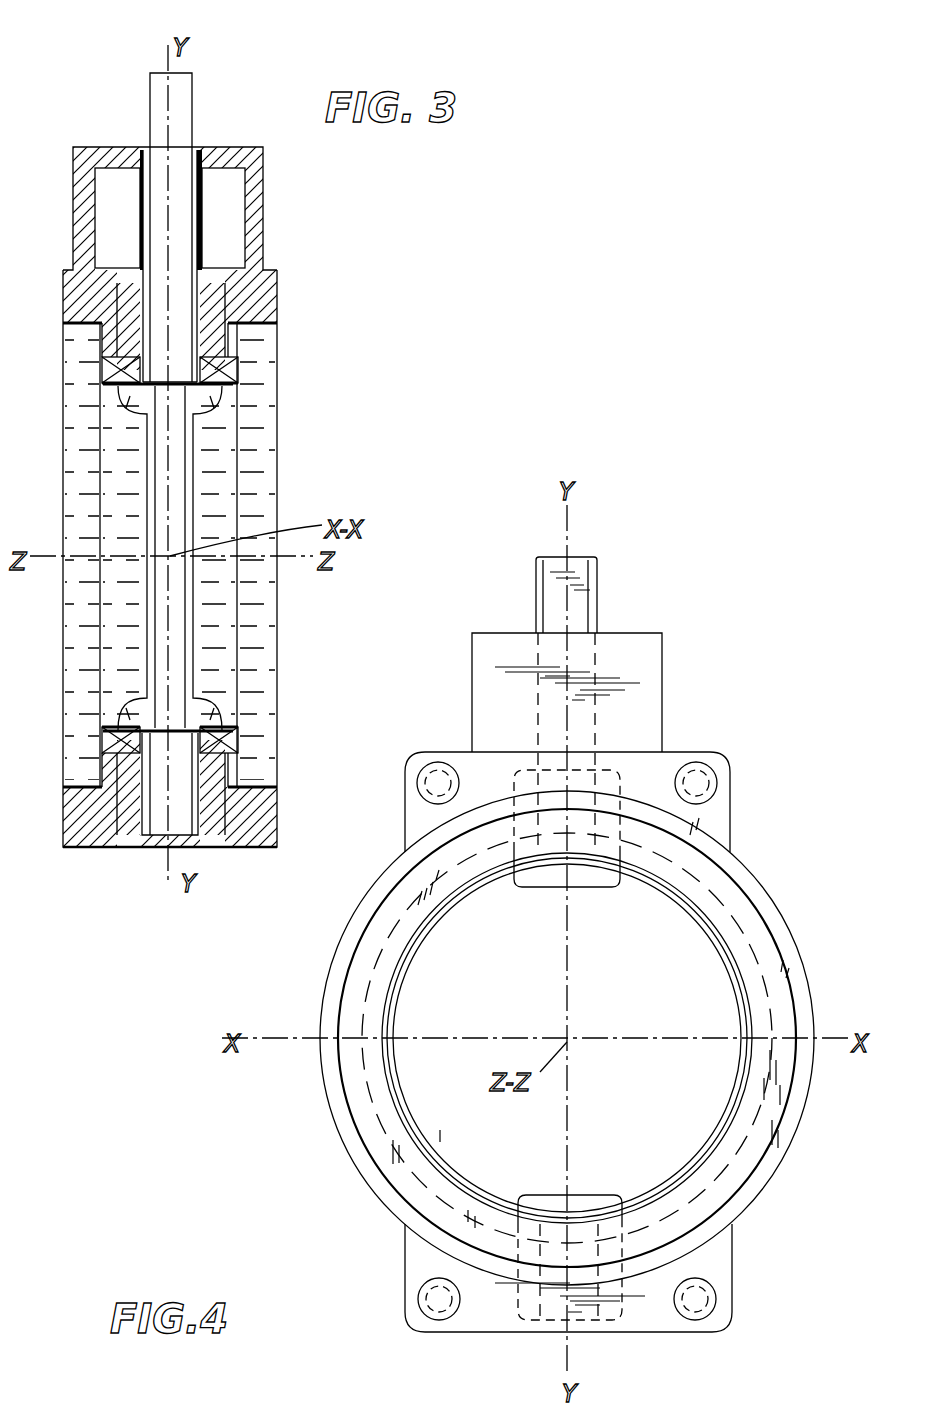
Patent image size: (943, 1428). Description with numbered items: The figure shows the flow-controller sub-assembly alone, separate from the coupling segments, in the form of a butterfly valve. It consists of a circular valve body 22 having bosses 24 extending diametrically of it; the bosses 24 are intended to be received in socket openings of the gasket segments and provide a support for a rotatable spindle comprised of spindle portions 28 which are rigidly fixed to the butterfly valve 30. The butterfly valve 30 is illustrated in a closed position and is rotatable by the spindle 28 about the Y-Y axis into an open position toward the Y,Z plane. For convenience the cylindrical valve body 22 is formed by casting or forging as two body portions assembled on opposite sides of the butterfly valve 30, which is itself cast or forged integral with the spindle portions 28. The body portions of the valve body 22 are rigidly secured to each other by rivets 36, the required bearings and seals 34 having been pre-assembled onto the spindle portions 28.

In FIG. 3, the valve body 22 is at (265, 630).
In FIG. 4, the valve body 22 is at (778, 983).
In FIG. 3, the bosses 24 is at (265, 322).
In FIG. 4, the bosses 24 is at (640, 762).
In FIG. 3, the spindle portions 28 is at (180, 166).
In FIG. 4, the spindle portions 28 is at (573, 597).
In FIG. 3, the butterfly valve 30 is at (190, 452).
In FIG. 4, the butterfly valve 30 is at (683, 937).
In FIG. 3, the seals 34 is at (212, 300).
In FIG. 3, the rivets 36 is at (227, 372).